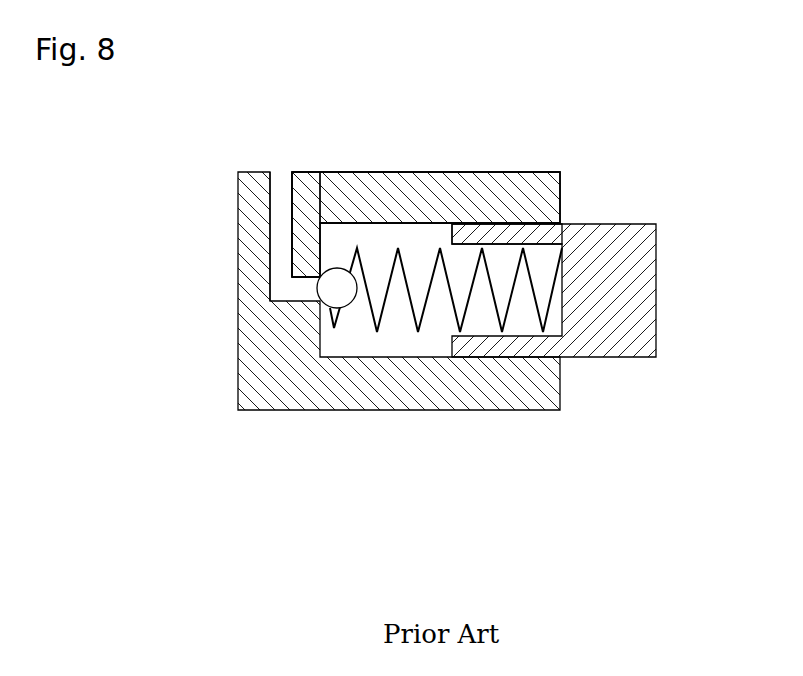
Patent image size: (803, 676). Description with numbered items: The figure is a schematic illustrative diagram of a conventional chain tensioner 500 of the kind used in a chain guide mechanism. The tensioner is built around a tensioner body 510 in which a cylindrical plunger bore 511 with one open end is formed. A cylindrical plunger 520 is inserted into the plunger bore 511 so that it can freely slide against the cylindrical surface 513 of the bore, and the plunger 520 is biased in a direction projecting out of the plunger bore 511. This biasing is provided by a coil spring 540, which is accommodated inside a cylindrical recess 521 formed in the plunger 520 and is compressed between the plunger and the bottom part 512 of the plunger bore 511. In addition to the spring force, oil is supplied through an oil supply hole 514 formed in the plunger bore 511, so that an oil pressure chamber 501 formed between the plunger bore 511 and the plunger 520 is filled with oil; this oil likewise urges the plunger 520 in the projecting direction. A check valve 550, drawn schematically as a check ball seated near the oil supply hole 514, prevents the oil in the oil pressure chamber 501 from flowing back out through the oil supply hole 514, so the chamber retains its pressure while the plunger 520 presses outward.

The chain tensioner 500 is at (642, 108).
The oil pressure chamber 501 is at (400, 318).
The tensioner body 510 is at (347, 392).
The plunger bore 511 is at (443, 115).
The bottom part 512 is at (322, 240).
The cylindrical surface 513 is at (437, 230).
The oil supply hole 514 is at (282, 172).
The plunger 520 is at (642, 312).
The cylindrical recess 521 is at (507, 255).
The coil spring 540 is at (549, 320).
The check valve 550 is at (318, 288).